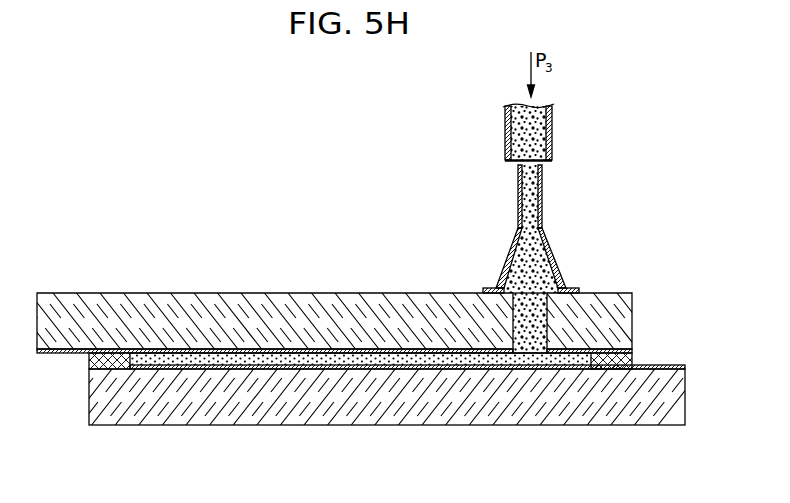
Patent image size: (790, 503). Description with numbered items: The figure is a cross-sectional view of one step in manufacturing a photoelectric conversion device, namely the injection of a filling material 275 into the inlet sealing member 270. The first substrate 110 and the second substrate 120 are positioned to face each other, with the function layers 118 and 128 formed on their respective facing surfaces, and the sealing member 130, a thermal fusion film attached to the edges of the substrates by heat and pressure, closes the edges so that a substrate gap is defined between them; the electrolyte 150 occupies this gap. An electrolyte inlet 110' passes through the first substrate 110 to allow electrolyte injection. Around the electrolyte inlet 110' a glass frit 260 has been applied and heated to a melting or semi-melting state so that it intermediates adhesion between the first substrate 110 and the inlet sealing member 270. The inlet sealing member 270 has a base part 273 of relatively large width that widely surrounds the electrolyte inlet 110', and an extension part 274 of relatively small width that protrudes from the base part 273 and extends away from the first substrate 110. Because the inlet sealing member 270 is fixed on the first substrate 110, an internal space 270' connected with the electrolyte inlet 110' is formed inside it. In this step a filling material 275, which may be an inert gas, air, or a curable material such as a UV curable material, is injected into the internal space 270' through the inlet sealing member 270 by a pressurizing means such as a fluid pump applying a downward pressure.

The first substrate 110 is at (355, 321).
The electrolyte inlet 110' is at (580, 302).
The function layer 118 is at (311, 349).
The second substrate 120 is at (678, 396).
The function layer 128 is at (360, 368).
The sealing member 130 is at (633, 357).
The electrolyte 150 is at (428, 360).
The glass frit 260 is at (490, 288).
The inlet sealing member 270 is at (509, 198).
The internal space 270' is at (497, 258).
The base part 273 is at (551, 248).
The extension part 274 is at (543, 210).
The filling material 275 is at (532, 188).